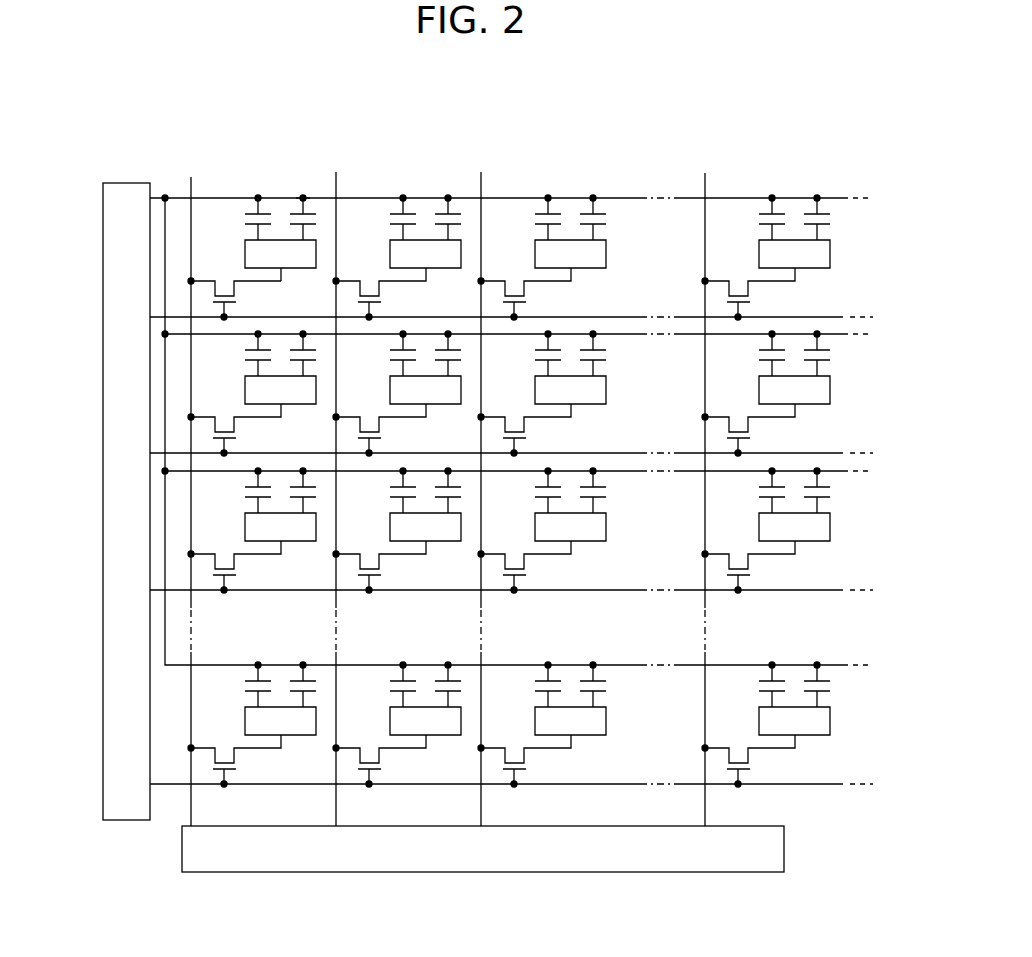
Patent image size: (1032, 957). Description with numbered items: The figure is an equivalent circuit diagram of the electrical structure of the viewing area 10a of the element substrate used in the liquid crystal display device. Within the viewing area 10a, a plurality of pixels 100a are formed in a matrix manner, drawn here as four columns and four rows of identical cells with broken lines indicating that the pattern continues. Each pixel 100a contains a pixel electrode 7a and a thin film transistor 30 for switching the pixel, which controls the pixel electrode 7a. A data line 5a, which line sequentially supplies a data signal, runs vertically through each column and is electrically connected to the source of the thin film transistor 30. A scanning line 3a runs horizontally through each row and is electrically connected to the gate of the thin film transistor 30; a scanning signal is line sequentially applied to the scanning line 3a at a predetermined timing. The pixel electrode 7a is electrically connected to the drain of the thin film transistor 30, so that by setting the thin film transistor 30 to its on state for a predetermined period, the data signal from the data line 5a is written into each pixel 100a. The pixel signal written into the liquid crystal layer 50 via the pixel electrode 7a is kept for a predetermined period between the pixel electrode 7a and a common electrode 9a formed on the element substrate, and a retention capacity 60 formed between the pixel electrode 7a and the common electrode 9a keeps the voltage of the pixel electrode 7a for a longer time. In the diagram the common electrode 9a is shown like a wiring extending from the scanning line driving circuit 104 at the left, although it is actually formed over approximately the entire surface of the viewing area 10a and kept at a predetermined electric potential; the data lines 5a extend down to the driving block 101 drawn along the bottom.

The scanning line 3a is at (875, 751).
The data line 5a is at (750, 142).
The pixel electrode 7a is at (303, 268).
The common electrode 9a is at (388, 197).
The viewing area 10a is at (805, 182).
The thin film transistor 30 is at (237, 288).
The liquid crystal layer 50 is at (316, 225).
The retention capacity 60 is at (241, 219).
The pixel 100a is at (302, 197).
The data line drive circuit 101 is at (188, 855).
The scanning line driving circuit 104 is at (113, 787).